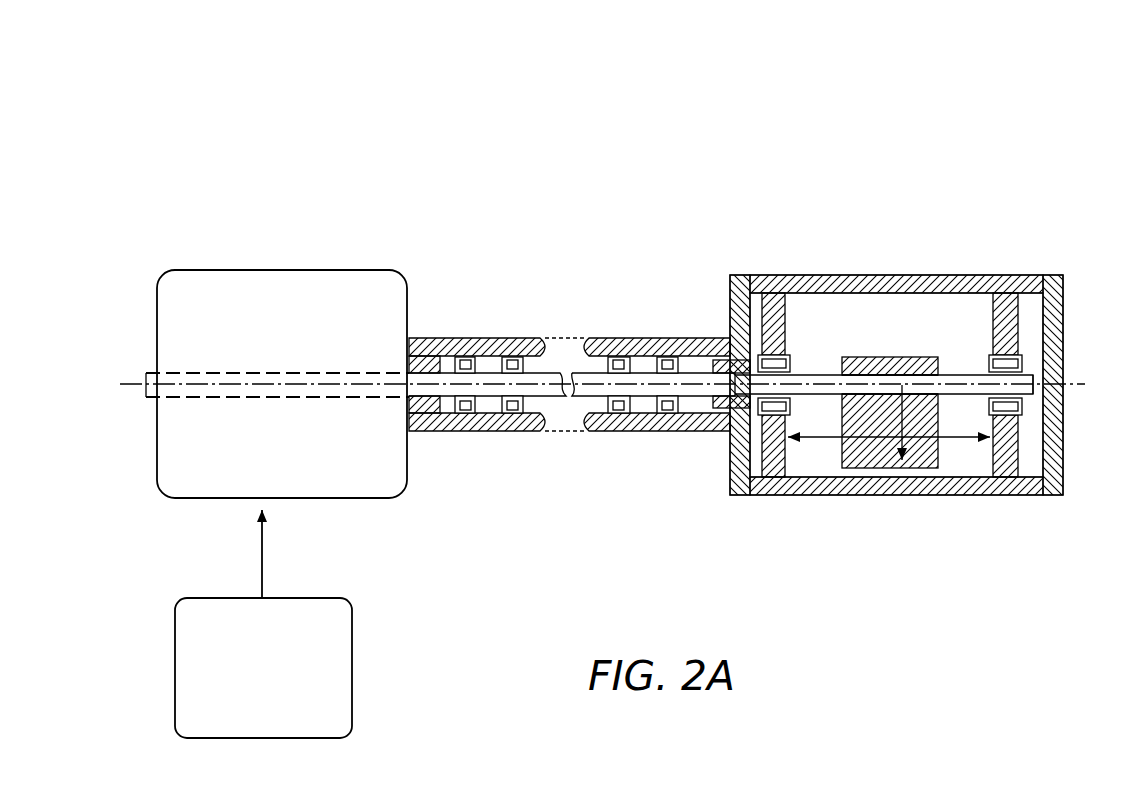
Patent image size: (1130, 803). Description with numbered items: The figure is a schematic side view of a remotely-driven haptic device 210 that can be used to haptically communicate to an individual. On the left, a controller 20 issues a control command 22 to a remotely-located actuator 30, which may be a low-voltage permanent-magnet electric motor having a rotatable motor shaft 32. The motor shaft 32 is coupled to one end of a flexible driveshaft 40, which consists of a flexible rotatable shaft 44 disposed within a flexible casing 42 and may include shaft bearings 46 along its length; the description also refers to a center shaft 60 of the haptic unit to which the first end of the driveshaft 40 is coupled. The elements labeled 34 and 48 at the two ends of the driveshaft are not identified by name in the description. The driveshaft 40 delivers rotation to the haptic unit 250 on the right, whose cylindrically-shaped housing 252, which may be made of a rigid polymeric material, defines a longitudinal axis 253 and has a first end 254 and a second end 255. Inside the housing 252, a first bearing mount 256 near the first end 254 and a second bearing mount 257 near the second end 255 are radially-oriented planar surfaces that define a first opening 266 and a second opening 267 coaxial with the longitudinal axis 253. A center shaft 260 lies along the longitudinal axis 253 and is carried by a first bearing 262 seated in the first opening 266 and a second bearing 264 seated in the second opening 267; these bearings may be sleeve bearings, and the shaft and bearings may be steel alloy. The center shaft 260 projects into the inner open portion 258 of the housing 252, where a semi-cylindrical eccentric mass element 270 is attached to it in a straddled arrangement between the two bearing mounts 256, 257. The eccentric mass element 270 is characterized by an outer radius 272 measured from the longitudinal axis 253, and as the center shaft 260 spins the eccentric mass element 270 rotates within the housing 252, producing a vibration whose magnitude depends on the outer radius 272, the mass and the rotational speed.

The controller 20 is at (249, 682).
The control command 22 is at (268, 567).
The remotely-located actuator 30 is at (272, 267).
The motor shaft 32 is at (257, 400).
The hub 34 is at (425, 357).
The flexible driveshaft 40 is at (478, 333).
The flexible casing 42 is at (517, 338).
The flexible rotatable shaft 44 is at (603, 375).
The shaft bearings 46 is at (668, 356).
The coupling hub 48 is at (722, 360).
The center shaft 60 is at (883, 427).
The remotely-driven haptic device 210 is at (368, 165).
The haptic unit 250 is at (1017, 268).
The housing 252 is at (945, 275).
The longitudinal axis 253 is at (1022, 388).
The first end 254 is at (738, 268).
The second end 255 is at (1050, 500).
The first bearing mount 256 is at (777, 465).
The second bearing mount 257 is at (1005, 468).
The inner open portion 258 is at (948, 473).
The center shaft 260 is at (868, 400).
The first bearing 262 is at (786, 368).
The second bearing 264 is at (1024, 368).
The first opening 266 is at (798, 348).
The second opening 267 is at (1024, 349).
The eccentric mass element 270 is at (893, 356).
The outer radius 272 is at (798, 433).